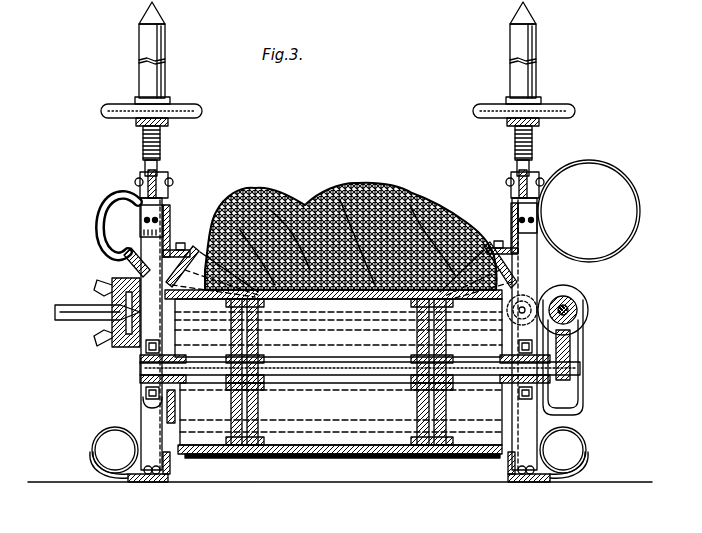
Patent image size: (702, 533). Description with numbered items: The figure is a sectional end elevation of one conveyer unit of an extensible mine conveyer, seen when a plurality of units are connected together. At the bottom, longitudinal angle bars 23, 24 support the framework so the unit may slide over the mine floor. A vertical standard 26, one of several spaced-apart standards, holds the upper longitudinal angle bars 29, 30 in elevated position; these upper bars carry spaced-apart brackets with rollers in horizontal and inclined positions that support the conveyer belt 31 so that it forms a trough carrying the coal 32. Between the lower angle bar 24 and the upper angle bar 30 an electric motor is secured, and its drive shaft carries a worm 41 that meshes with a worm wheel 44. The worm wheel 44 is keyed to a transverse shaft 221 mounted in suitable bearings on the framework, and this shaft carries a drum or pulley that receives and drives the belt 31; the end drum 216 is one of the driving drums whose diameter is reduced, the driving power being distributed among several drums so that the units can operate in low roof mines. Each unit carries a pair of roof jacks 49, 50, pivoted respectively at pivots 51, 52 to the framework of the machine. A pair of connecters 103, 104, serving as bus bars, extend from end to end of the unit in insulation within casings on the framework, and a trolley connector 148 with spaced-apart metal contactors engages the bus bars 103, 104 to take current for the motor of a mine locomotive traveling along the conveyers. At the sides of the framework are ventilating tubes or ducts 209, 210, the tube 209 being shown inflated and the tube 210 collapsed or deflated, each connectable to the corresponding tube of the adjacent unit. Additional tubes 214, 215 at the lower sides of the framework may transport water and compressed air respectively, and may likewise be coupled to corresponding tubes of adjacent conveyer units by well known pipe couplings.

The roof jack 49 is at (120, 97).
The roof jack 50 is at (500, 95).
The pivot 51 is at (140, 182).
The pivot 52 is at (511, 182).
The upper longitudinal angle bar 29 is at (170, 224).
The upper longitudinal angle bar 30 is at (510, 224).
The conveyer belt 31 is at (200, 250).
The coal 32 is at (380, 178).
The ventilating tube 209 is at (586, 170).
The ventilating tube 210 is at (98, 230).
The connecter (bus bar) 103 is at (112, 285).
The connecter (bus bar) 104 is at (112, 345).
The trolley connector 148 is at (80, 305).
The tube 215 is at (98, 470).
The longitudinal angle bar 23 is at (171, 476).
The end drum 216 is at (365, 452).
The longitudinal angle bar 24 is at (512, 476).
The tube 214 is at (590, 460).
The vertical standard 26 is at (540, 280).
The worm 41 is at (590, 310).
The worm wheel 44 is at (570, 392).
The transverse shaft 221 is at (357, 374).